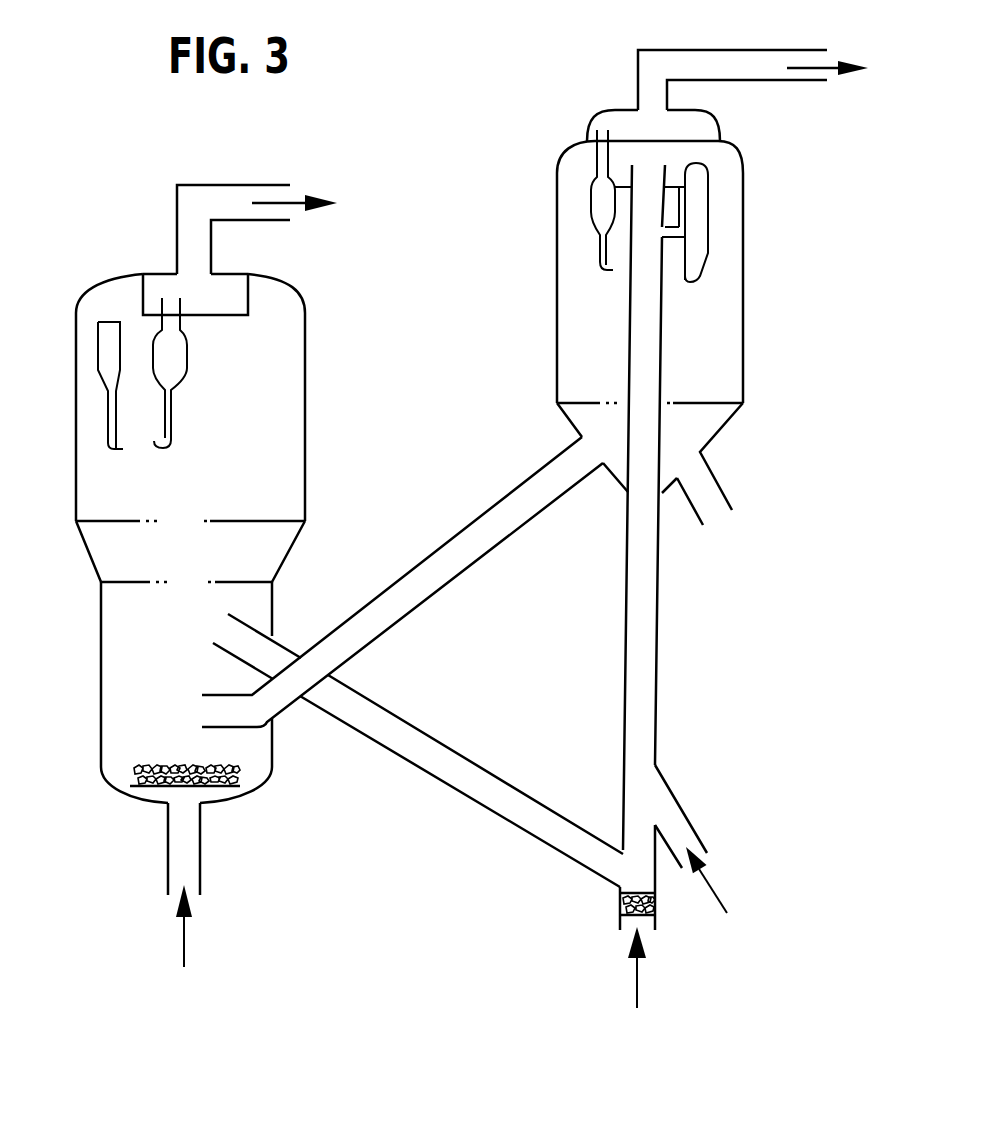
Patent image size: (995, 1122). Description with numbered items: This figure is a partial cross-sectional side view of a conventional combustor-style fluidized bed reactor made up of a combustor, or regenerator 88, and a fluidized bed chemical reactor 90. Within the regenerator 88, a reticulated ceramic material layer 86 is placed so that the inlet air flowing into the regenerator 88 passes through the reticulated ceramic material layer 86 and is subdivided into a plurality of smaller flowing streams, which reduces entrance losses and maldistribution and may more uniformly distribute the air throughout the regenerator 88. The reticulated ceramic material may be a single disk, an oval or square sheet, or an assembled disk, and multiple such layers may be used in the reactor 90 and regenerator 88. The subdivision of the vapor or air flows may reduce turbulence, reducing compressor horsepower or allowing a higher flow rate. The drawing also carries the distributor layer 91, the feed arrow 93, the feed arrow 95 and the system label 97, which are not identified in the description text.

The gas distributor grid of first vessel 86 is at (130, 790).
The first fluidized bed vessel 88 is at (82, 546).
The second fluidized bed vessel with riser 90 is at (750, 346).
The gas distributor grid of riser 91 is at (620, 903).
The fluidizing gas feed to first vessel 93 is at (184, 942).
The feed gas to riser 95 is at (637, 990).
The two-vessel circulating fluidized bed reactor system 97 is at (429, 182).